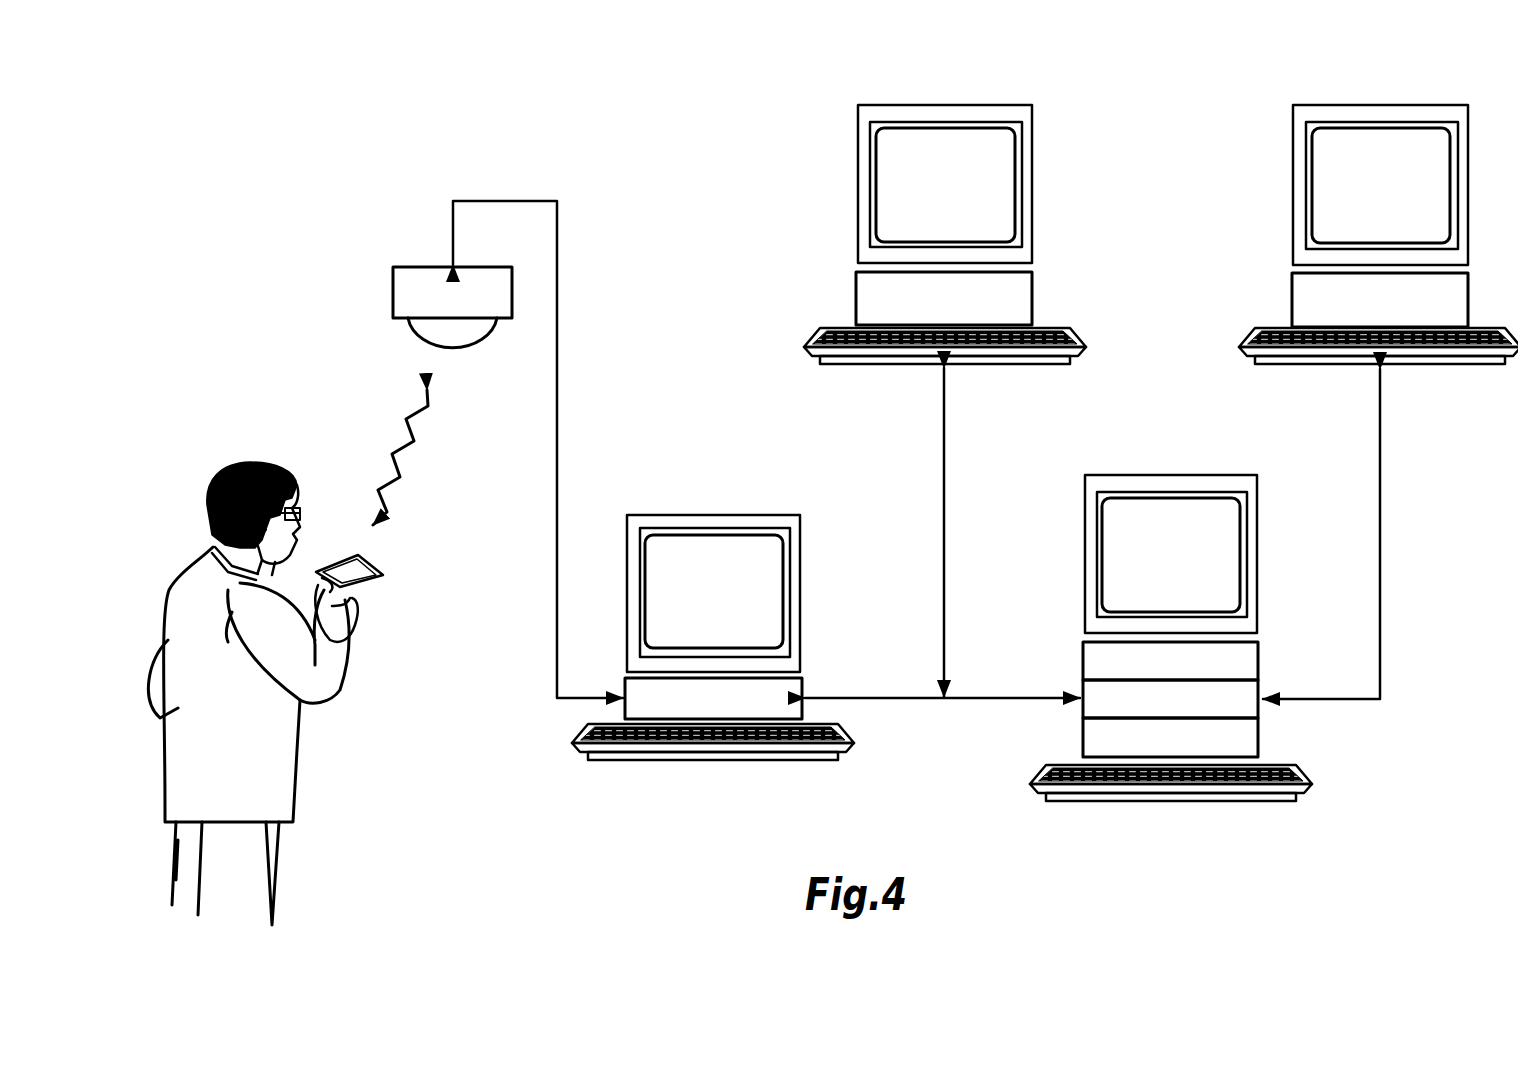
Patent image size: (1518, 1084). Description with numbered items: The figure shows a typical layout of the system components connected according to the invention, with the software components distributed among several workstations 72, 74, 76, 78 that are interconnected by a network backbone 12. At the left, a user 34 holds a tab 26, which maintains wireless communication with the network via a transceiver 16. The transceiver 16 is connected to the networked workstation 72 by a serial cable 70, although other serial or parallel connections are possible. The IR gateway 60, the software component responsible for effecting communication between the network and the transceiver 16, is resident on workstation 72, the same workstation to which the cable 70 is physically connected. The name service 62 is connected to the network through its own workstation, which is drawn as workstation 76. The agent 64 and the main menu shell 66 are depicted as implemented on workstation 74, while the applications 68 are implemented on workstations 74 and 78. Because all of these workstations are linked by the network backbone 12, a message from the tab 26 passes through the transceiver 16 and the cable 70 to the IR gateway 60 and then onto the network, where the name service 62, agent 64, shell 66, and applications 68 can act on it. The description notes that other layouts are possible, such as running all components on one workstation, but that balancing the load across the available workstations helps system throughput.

The network backbone 12 is at (944, 518).
The transceiver 16 is at (413, 285).
The tab 26 is at (385, 575).
The user 34 is at (205, 580).
The IR gateway 60 is at (787, 692).
The name service 62 is at (880, 297).
The agent 64 is at (1243, 660).
The main menu shell 66 is at (1243, 744).
The applications 68 is at (1312, 298).
The RS-232 cable 70 is at (557, 380).
The workstation 72 is at (722, 553).
The workstation 74 is at (1178, 512).
The workstation 76 is at (895, 178).
The workstation 78 is at (1330, 178).